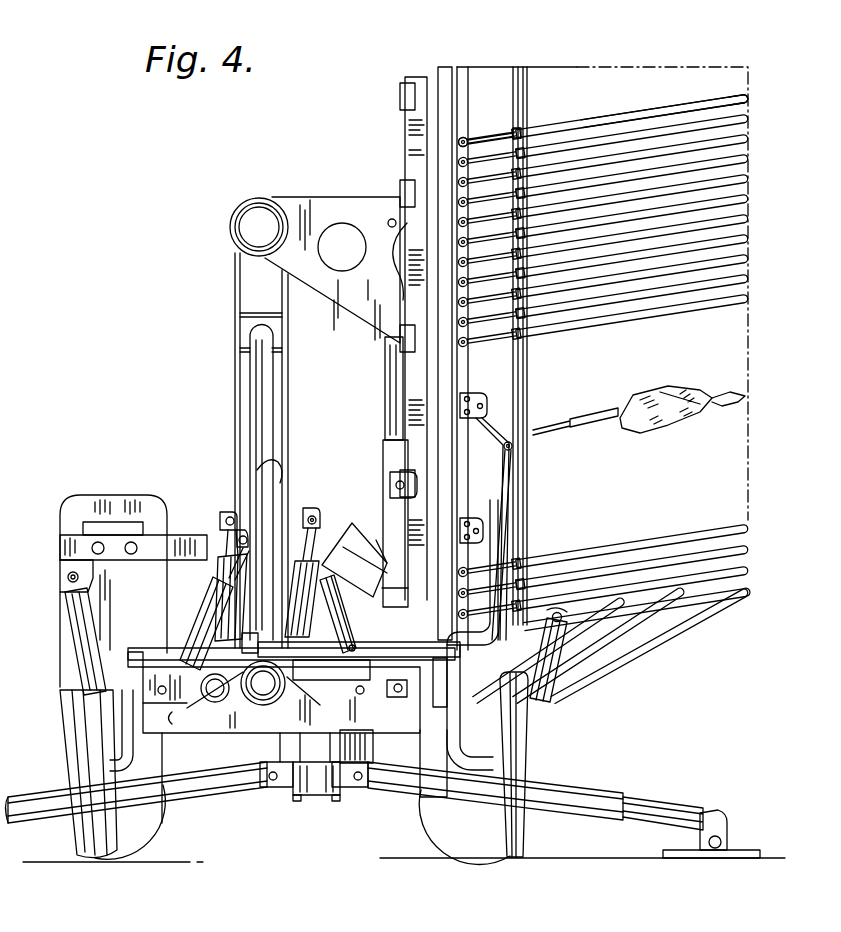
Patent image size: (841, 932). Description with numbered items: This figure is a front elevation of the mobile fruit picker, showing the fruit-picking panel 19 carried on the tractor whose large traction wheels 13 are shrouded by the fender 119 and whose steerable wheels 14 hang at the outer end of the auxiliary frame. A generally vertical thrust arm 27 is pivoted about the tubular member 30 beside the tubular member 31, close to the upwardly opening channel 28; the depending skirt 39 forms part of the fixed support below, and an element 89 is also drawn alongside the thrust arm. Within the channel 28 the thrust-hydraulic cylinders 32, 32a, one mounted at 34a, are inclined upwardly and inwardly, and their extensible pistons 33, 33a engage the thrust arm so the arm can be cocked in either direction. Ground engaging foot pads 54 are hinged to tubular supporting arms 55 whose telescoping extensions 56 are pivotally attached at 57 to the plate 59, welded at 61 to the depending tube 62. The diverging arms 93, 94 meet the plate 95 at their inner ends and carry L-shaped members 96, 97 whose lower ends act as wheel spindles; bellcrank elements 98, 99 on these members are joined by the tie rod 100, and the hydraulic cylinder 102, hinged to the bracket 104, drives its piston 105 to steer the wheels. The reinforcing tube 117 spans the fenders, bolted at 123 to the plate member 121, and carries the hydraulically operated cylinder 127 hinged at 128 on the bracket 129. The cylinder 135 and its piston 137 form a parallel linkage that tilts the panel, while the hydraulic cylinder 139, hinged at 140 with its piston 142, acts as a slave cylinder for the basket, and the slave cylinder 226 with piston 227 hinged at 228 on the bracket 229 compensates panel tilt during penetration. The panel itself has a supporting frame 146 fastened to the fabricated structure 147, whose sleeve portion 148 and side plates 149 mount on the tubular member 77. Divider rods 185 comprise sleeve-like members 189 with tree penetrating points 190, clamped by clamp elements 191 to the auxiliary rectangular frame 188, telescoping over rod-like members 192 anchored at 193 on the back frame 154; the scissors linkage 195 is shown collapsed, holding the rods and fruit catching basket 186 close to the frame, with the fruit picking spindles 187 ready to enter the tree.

The traction wheels 13 is at (131, 856).
The steerable wheels 14 is at (60, 736).
The fruit-picking panel 19 is at (752, 574).
The thrust arm 27 is at (235, 409).
The upwardly opening channel 28 is at (328, 688).
The tubular member 30 is at (259, 700).
The tubular member 31 is at (214, 672).
The thrust-hydraulic cylinder 32 is at (186, 616).
The thrust-hydraulic cylinder 32a is at (330, 614).
The extensible piston 33 is at (226, 549).
The extensible piston 33a is at (385, 560).
The mounting 34a is at (362, 692).
The depending skirt 39 is at (360, 750).
The ground engaging foot pads 54 is at (735, 858).
The tubular supporting arms 55 is at (200, 796).
The telescoping extensions 56 is at (680, 809).
The pivot 57 is at (270, 774).
The plate 59 is at (275, 788).
The weld 61 is at (300, 800).
The depending tube 62 is at (315, 796).
The tubular member 77 is at (248, 198).
The cylinder 89 is at (250, 373).
The diverging arm 93 is at (433, 733).
The diverging arm 94 is at (166, 740).
The plate 95 is at (288, 724).
The L-shaped member 96 is at (462, 758).
The L-shaped member 97 is at (138, 742).
The bellcrank element 98 is at (455, 640).
The bellcrank element 99 is at (130, 664).
The tie rod 100 is at (140, 652).
The hydraulic cylinder 102 is at (354, 646).
The bracket 104 is at (262, 650).
The piston 105 is at (420, 686).
The reinforcing tube 117 is at (170, 538).
The tractor fender 119 is at (101, 498).
The plate member 121 is at (128, 521).
The bolt 123 is at (131, 542).
The hydraulically operated cylinder 127 is at (75, 651).
The hinge 128 is at (68, 582).
The bracket 129 is at (60, 570).
The cylinder 135 is at (368, 578).
The piston 137 is at (388, 362).
The hydraulic cylinder 139 is at (230, 580).
The hinge mounting 140 is at (230, 516).
The piston 142 is at (220, 690).
The supporting frame 146 is at (405, 128).
The fabricated structure 147 is at (302, 204).
The sleeve portion 148 is at (229, 221).
The side plates 149 is at (354, 198).
The back frame 154 is at (445, 62).
The divider rods 185 is at (580, 118).
The fruit catching basket 186 is at (660, 640).
The fruit picking spindles 187 is at (688, 378).
The auxiliary rectangular frame 188 is at (530, 515).
The sleeve-like members 189 is at (664, 106).
The tree penetrating points 190 is at (747, 96).
The clamp elements 191 is at (522, 130).
The rod-like members 192 is at (488, 138).
The anchor 193 is at (458, 141).
The scissors linkage 195 is at (482, 422).
The slave cylinder 226 is at (331, 669).
The piston 227 is at (328, 532).
The hinge mounting 228 is at (315, 510).
The bracket 229 is at (300, 512).